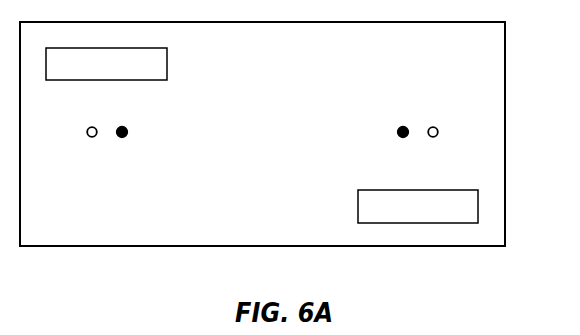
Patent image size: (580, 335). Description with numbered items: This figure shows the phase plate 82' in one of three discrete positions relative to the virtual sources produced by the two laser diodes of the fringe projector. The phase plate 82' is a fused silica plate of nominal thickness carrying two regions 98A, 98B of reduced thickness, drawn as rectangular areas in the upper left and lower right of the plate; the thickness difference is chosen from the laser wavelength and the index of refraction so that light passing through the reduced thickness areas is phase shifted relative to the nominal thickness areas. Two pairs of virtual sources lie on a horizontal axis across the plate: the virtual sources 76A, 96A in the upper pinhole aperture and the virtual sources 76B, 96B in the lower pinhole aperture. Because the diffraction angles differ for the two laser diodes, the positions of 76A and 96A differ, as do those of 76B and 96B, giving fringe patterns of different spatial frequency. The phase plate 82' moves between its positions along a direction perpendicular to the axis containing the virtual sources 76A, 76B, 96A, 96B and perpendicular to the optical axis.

The phase plate 82' is at (287, 134).
The region of reduced thickness 98A is at (167, 62).
The region of reduced thickness 98B is at (358, 205).
The virtual source 96A is at (92, 137).
The virtual source 96B is at (433, 137).
The virtual source 76A is at (122, 137).
The virtual source 76B is at (402, 137).